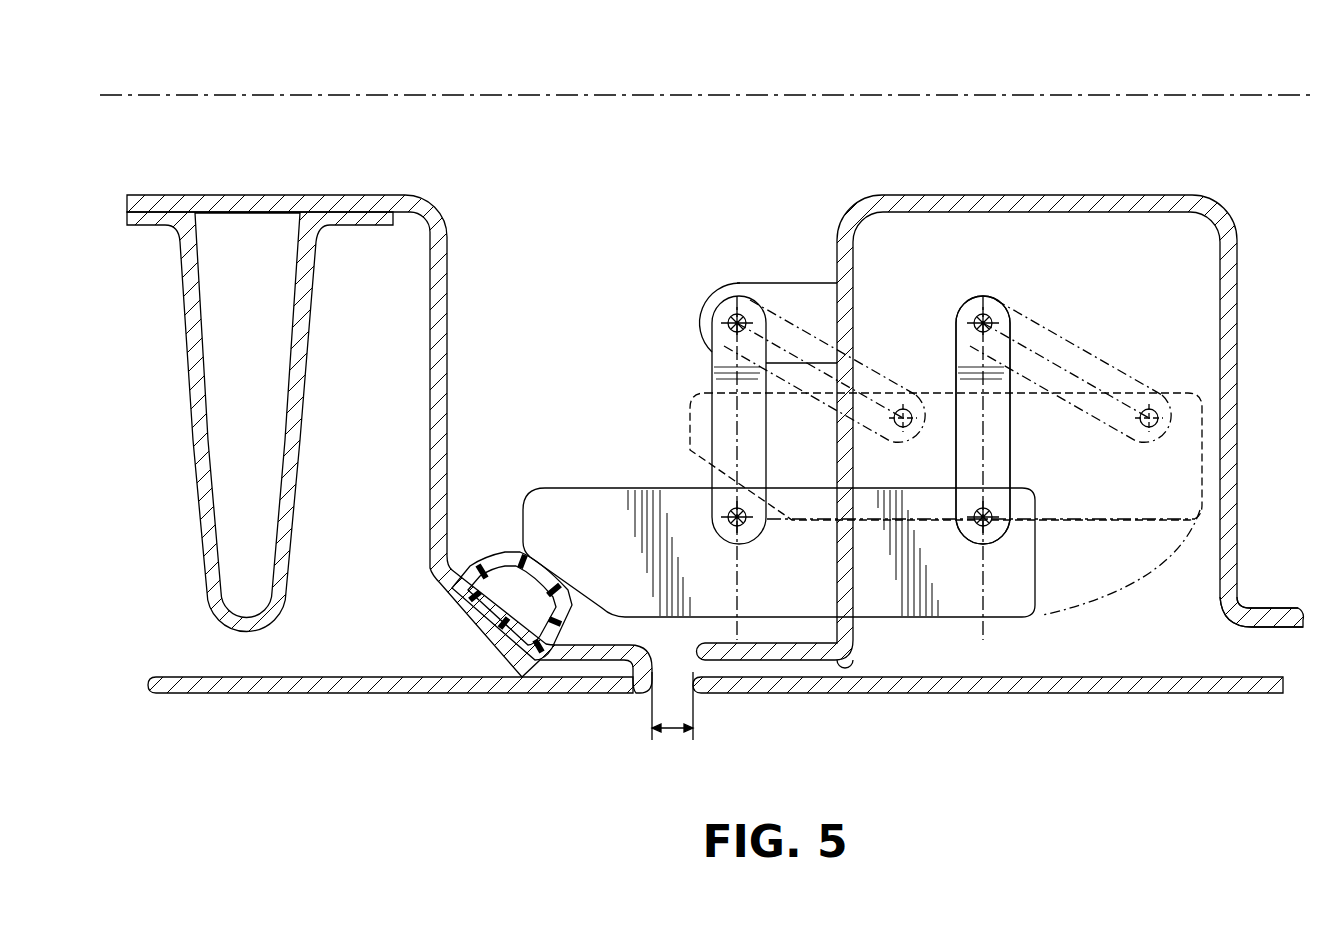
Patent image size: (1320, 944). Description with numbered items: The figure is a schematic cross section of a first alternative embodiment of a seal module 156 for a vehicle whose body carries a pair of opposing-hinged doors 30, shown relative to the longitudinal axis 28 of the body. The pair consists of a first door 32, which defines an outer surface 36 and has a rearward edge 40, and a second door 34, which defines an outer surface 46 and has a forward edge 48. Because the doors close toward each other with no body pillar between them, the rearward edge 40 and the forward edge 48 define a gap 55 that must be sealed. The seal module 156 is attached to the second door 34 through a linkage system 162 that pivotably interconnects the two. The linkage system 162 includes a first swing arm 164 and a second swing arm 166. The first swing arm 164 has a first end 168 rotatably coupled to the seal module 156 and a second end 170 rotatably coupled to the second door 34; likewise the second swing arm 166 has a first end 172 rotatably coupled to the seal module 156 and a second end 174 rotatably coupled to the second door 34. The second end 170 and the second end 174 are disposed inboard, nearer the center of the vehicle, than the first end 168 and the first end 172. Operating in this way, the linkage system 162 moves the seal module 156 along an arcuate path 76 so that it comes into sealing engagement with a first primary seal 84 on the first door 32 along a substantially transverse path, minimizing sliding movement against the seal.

The longitudinal axis 28 is at (877, 95).
The opposing-hinged doors 30 is at (719, 714).
The first door 32 is at (252, 694).
The second door 34 is at (1075, 694).
The outer surface 36 is at (327, 695).
The rearward edge 40 is at (652, 677).
The outer surface 46 is at (1210, 694).
The forward edge 48 is at (672, 714).
The gap 55 is at (672, 735).
The arcuate path 76 is at (1135, 589).
The first primary seal 84 is at (497, 566).
The seal module 156 is at (686, 275).
The linkage system 162 is at (891, 307).
The first swing arm 164 is at (710, 428).
The second swing arm 166 is at (1013, 453).
The first end of first swing arm 168 is at (740, 546).
The second end of first swing arm 170 is at (742, 297).
The first end of second swing arm 172 is at (987, 541).
The second end of second swing arm 174 is at (984, 297).